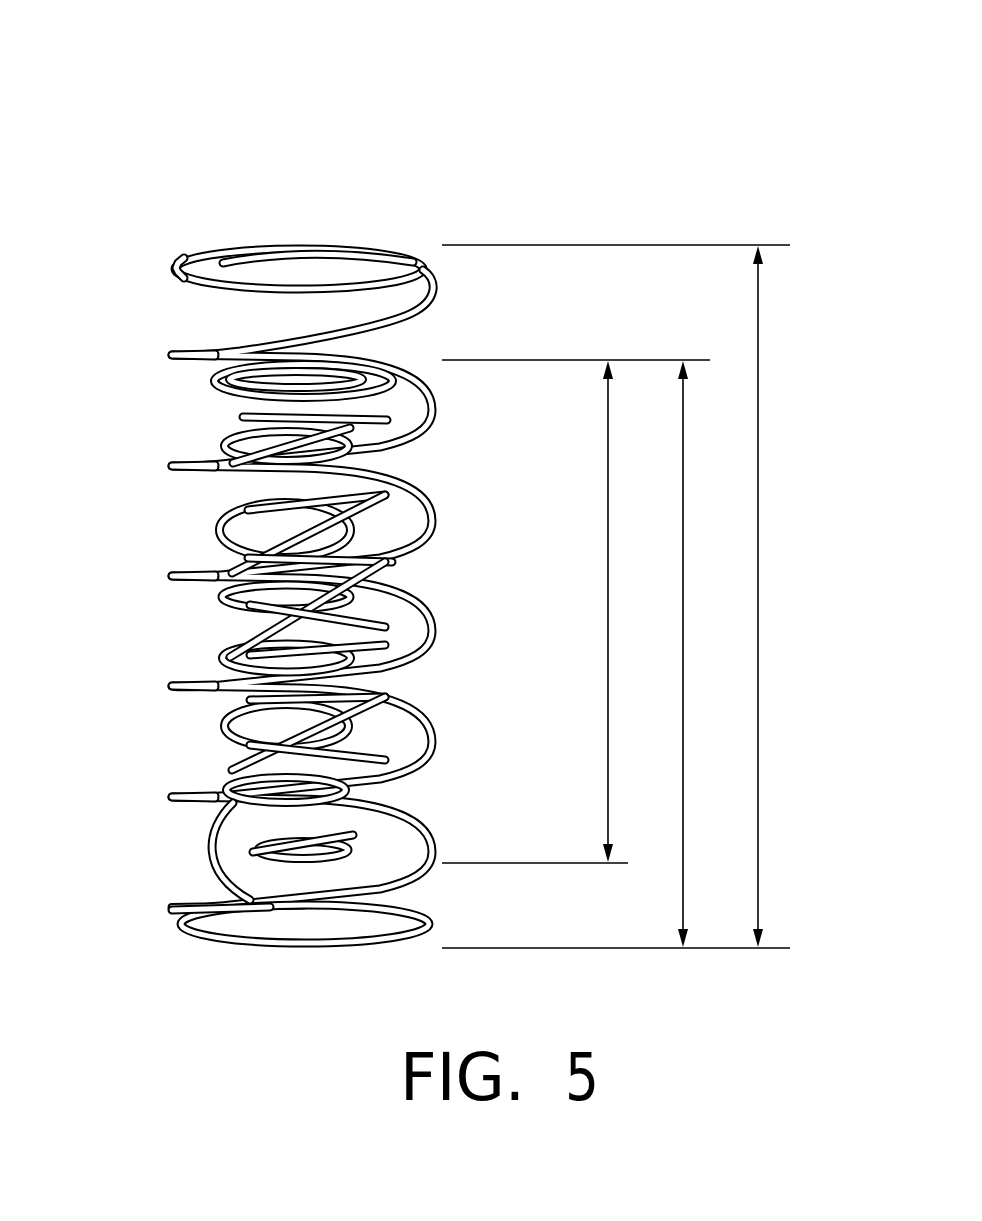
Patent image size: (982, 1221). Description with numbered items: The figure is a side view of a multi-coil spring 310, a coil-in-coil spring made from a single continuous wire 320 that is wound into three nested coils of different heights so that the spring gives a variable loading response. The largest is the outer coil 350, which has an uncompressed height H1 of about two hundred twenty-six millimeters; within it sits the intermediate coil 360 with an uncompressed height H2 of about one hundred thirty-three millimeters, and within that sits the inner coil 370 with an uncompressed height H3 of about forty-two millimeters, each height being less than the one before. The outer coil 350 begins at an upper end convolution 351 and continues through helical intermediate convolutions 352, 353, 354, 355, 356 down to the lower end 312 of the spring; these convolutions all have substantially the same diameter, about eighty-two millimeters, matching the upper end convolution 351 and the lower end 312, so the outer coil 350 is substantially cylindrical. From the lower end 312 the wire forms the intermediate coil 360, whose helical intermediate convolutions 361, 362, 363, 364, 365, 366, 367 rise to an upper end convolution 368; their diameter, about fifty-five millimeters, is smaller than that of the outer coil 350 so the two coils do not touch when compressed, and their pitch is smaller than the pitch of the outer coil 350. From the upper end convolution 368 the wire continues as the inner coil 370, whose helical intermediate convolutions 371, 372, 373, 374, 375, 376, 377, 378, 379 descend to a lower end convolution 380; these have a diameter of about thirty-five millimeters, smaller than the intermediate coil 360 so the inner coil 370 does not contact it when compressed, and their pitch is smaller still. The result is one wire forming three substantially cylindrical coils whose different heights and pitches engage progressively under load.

The multi-coil spring 310 is at (150, 96).
The lower end 312 is at (415, 947).
The continuous wire 320 is at (330, 247).
The outer coil 350 is at (310, 558).
The upper end convolution 351 is at (175, 256).
The helical intermediate convolution 352 is at (180, 350).
The helical intermediate convolution 353 is at (180, 465).
The helical intermediate convolution 354 is at (180, 577).
The helical intermediate convolution 355 is at (182, 686).
The helical intermediate convolution 356 is at (180, 796).
The intermediate coil 360 is at (303, 639).
The helical intermediate convolution 361 is at (222, 906).
The helical intermediate convolution 362 is at (240, 800).
The helical intermediate convolution 363 is at (222, 733).
The helical intermediate convolution 364 is at (221, 656).
The helical intermediate convolution 365 is at (220, 595).
The helical intermediate convolution 366 is at (218, 528).
The helical intermediate convolution 367 is at (226, 445).
The upper end convolution 368 is at (218, 379).
The inner coil 370 is at (312, 641).
The helical intermediate convolution 371 is at (240, 414).
The helical intermediate convolution 372 is at (240, 471).
The helical intermediate convolution 373 is at (243, 508).
The helical intermediate convolution 374 is at (243, 557).
The helical intermediate convolution 375 is at (242, 619).
The helical intermediate convolution 376 is at (238, 660).
The helical intermediate convolution 377 is at (240, 705).
The helical intermediate convolution 378 is at (230, 755).
The helical intermediate convolution 379 is at (207, 845).
The lower end convolution 380 is at (210, 868).
The uncompressed height of the outer coil H1 is at (758, 611).
The uncompressed height of the intermediate coil H2 is at (683, 611).
The uncompressed height of the inner coil H3 is at (608, 611).